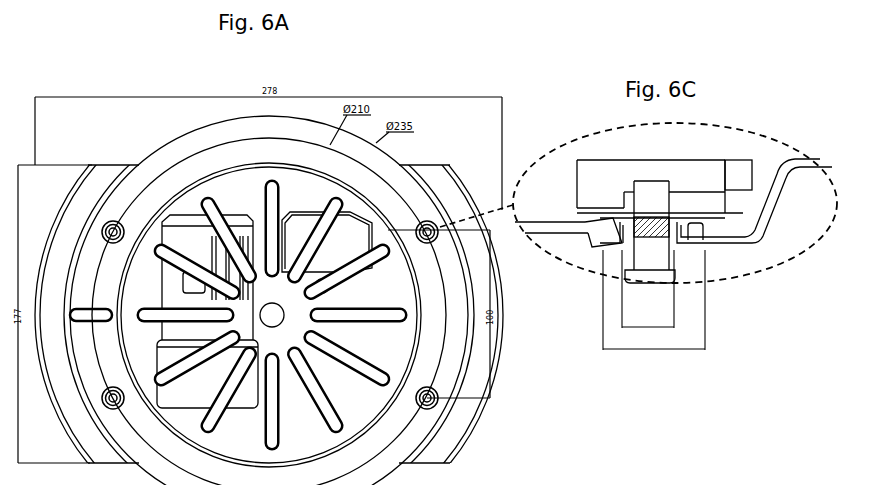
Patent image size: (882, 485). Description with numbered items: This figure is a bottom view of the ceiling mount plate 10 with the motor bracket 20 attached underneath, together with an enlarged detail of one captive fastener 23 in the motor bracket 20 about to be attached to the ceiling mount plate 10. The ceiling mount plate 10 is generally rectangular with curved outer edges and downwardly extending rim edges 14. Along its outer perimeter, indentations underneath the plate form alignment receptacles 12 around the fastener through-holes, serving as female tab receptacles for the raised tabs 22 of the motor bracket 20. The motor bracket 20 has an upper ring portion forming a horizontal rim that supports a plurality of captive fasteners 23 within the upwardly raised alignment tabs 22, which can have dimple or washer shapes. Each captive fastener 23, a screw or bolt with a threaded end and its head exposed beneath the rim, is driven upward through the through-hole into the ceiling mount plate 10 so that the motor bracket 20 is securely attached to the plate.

In FIG. 6A, the ceiling mount plate 10 is at (418, 478).
In FIG. 6C, the alignment receptacle 12 is at (602, 207).
In FIG. 6A, the rim edge 14 is at (466, 447).
In FIG. 6A, the motor bracket 20 is at (305, 435).
In FIG. 6A, the raised tab 22 is at (430, 224).
In FIG. 6C, the raised tab 22 is at (605, 227).
In FIG. 6C, the captive fastener 23 is at (668, 284).